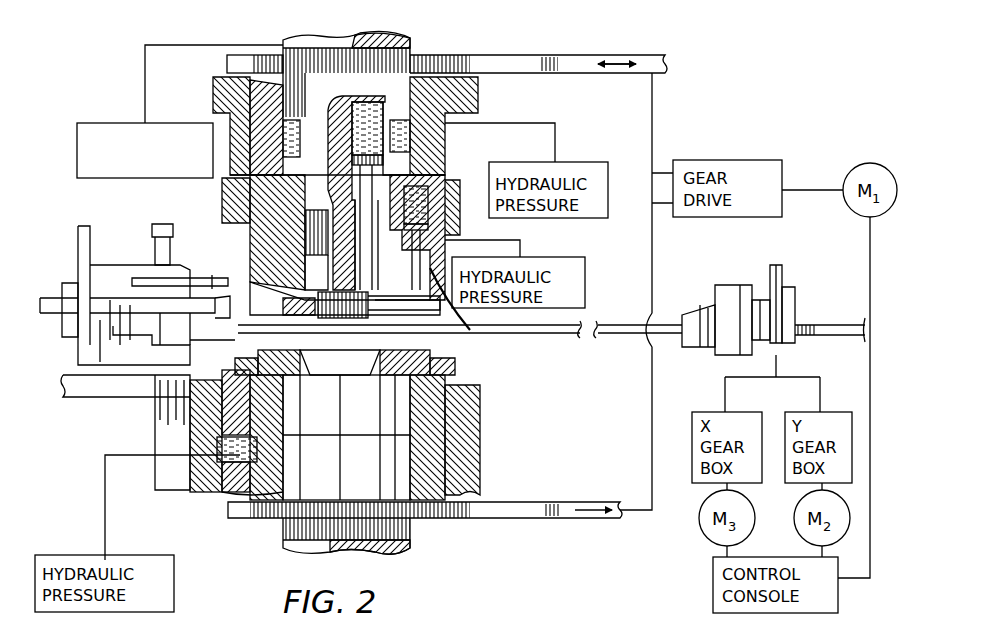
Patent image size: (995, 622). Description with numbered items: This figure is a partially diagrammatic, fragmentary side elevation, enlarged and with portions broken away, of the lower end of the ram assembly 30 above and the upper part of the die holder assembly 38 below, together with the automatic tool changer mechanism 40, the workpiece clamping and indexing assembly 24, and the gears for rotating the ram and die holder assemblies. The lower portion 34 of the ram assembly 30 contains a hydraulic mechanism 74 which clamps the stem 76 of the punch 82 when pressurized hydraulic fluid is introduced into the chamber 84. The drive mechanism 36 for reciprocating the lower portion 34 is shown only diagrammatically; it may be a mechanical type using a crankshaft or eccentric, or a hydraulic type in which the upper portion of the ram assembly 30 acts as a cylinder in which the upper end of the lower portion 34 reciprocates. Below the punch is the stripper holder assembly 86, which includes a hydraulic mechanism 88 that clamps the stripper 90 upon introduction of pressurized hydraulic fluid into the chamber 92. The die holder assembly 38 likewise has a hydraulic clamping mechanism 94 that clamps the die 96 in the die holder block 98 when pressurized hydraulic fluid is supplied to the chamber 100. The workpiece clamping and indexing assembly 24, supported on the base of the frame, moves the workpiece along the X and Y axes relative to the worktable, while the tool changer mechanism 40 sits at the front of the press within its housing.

The workpiece clamping and indexing assembly 24 is at (793, 300).
The ram assembly 30 is at (250, 118).
The lower portion of the ram assembly 34 is at (318, 187).
The drive mechanism 36 is at (132, 135).
The die holder assembly 38 is at (368, 450).
The automatic tool changer mechanism 40 is at (106, 290).
The hydraulic mechanism 74 is at (360, 197).
The stem 76 is at (332, 270).
The punch 82 is at (330, 312).
The chamber 84 is at (375, 128).
The stripper holder assembly 86 is at (440, 288).
The hydraulic mechanism 88 is at (424, 275).
The stripper 90 is at (300, 308).
The chamber 92 is at (445, 200).
The hydraulic clamping mechanism 94 is at (232, 405).
The die 96 is at (400, 348).
The die holder block 98 is at (410, 365).
The chamber 100 is at (235, 455).